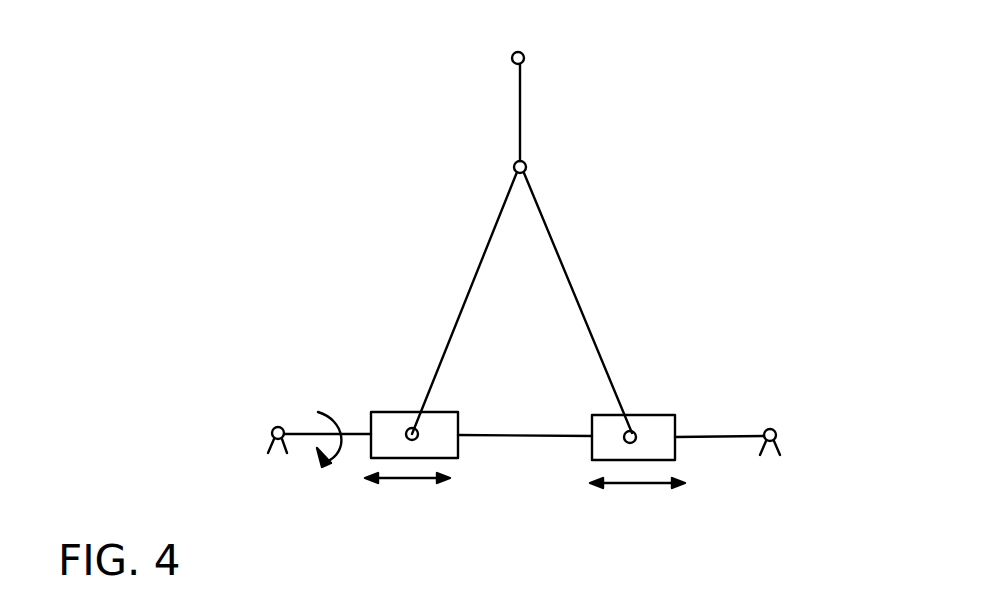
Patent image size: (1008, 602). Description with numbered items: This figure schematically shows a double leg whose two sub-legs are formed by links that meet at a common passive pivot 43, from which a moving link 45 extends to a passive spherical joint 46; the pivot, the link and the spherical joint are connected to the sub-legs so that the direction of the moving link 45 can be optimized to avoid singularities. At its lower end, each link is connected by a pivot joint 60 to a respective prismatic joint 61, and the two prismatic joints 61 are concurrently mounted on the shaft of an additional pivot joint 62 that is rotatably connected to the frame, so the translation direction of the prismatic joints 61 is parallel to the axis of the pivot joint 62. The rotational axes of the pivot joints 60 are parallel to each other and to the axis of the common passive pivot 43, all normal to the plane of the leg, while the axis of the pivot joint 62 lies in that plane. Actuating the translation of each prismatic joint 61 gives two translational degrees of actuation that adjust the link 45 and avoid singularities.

The common passive pivot 43 is at (510, 166).
The moving link 45 is at (530, 110).
The passive spherical joint 46 is at (528, 60).
The pivot joint 60 is at (407, 424).
The prismatic joint 61 is at (458, 412).
The pivot joint 62 is at (282, 425).